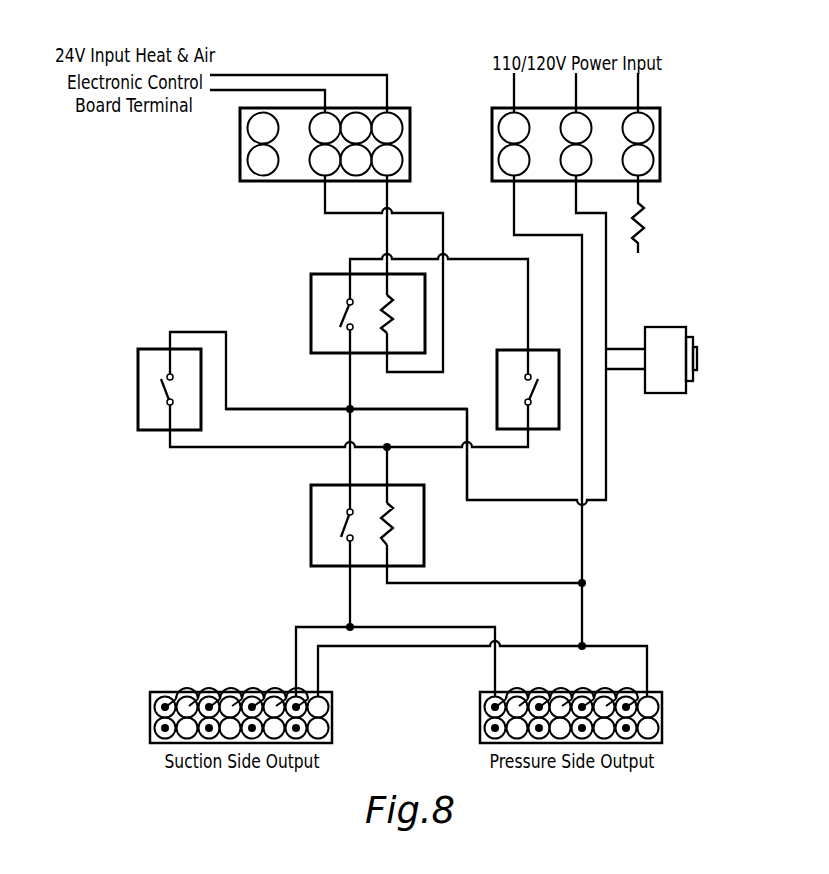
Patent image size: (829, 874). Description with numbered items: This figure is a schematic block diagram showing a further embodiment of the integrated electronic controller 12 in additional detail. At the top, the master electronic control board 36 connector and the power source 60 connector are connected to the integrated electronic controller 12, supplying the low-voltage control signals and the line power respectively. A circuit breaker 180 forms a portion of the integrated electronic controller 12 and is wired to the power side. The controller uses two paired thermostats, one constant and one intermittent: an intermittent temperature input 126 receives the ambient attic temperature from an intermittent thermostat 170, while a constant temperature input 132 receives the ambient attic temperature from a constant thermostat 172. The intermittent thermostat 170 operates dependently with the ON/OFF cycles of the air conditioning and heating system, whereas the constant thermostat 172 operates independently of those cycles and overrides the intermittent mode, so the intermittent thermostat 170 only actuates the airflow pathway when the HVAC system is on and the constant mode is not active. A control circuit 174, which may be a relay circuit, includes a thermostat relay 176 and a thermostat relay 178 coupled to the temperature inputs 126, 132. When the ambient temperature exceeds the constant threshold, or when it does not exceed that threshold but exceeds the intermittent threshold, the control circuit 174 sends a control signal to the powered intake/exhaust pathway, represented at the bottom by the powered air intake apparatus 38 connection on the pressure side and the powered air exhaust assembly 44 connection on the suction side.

The integrated electronic controller 12 is at (672, 487).
The master electronic control board connector 36 is at (239, 143).
The power source connector 60 is at (662, 146).
The thermostat relay 176 is at (311, 292).
The constant thermostat 172 is at (138, 388).
The constant temperature input 132 is at (260, 409).
The intermittent temperature input 126 is at (483, 421).
The intermittent thermostat 170 is at (559, 413).
The circuit breaker 180 is at (697, 380).
The control circuit 174 is at (288, 485).
The thermostat relay 178 is at (311, 543).
The powered air exhaust assembly connection 44 is at (150, 716).
The powered air intake apparatus connection 38 is at (662, 716).